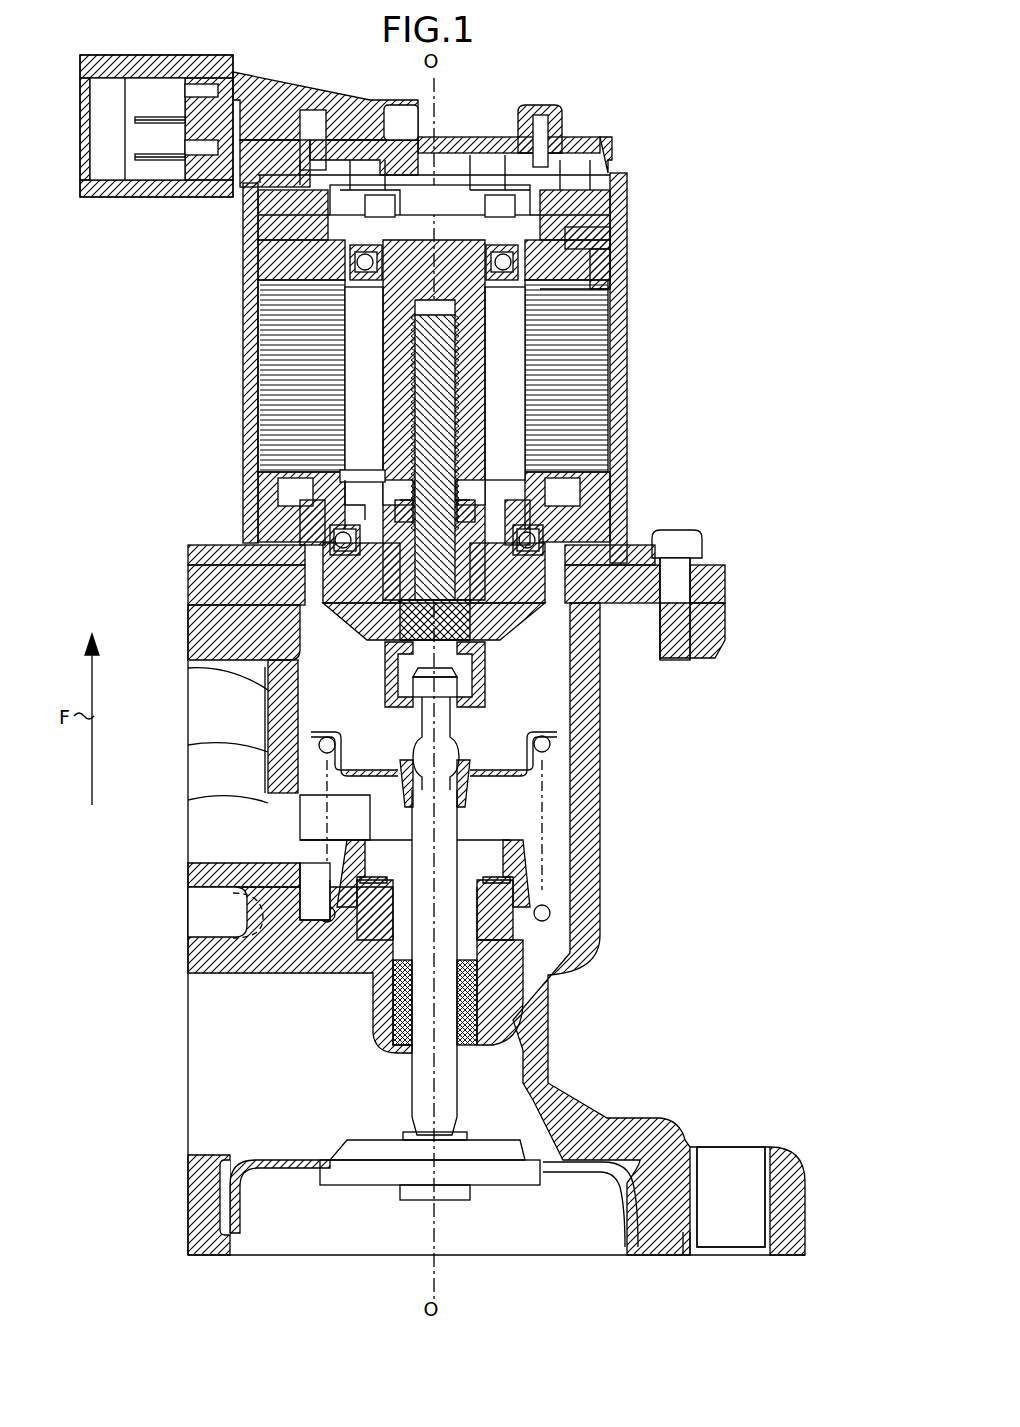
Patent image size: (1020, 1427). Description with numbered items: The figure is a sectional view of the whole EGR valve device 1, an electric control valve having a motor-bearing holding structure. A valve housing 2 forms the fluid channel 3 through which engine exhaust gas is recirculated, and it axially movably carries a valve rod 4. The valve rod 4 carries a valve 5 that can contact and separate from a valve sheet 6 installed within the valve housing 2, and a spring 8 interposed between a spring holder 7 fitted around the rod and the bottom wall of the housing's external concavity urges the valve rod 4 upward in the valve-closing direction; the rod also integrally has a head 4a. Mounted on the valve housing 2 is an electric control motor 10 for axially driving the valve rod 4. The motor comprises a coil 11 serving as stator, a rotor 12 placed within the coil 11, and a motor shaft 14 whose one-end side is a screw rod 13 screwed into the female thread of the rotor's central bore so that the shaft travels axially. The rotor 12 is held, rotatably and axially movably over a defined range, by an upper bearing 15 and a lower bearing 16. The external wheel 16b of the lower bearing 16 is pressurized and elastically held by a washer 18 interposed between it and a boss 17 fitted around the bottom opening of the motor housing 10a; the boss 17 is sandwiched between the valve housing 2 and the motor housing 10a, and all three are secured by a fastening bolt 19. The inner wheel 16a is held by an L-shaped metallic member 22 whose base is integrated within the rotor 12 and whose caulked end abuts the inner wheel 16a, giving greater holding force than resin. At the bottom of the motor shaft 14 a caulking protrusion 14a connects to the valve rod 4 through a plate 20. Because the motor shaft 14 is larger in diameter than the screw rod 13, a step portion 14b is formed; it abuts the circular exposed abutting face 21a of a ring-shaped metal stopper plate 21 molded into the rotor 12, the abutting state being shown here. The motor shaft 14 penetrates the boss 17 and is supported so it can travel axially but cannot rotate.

The EGR valve device 1 is at (501, 85).
The valve housing 2 is at (593, 893).
The fluid channel 3 is at (215, 1073).
The valve rod 4 is at (450, 835).
The head 4a is at (460, 800).
The valve 5 is at (500, 1190).
The valve sheet 6 is at (262, 1200).
The spring holder 7 is at (300, 793).
The spring 8 is at (320, 746).
The electric control motor 10 is at (630, 190).
The motor housing 10a is at (625, 251).
The coil 11 is at (268, 312).
The rotor 12 is at (575, 345).
The screw rod 13 is at (445, 405).
The motor shaft 14 is at (490, 668).
The protrusion 14a is at (490, 691).
The step portion 14b is at (498, 490).
The upper bearing 15 is at (357, 252).
The lower bearing 16 is at (395, 458).
The inner wheel 16a is at (365, 470).
The external wheel 16b is at (340, 530).
The boss 17 is at (300, 666).
The washer 18 is at (305, 612).
The fastening bolt 19 is at (700, 545).
The plate 20 is at (520, 765).
The stopper plate 21 is at (585, 492).
The exposed abutting face 21a is at (345, 400).
The metallic member 22 is at (300, 547).